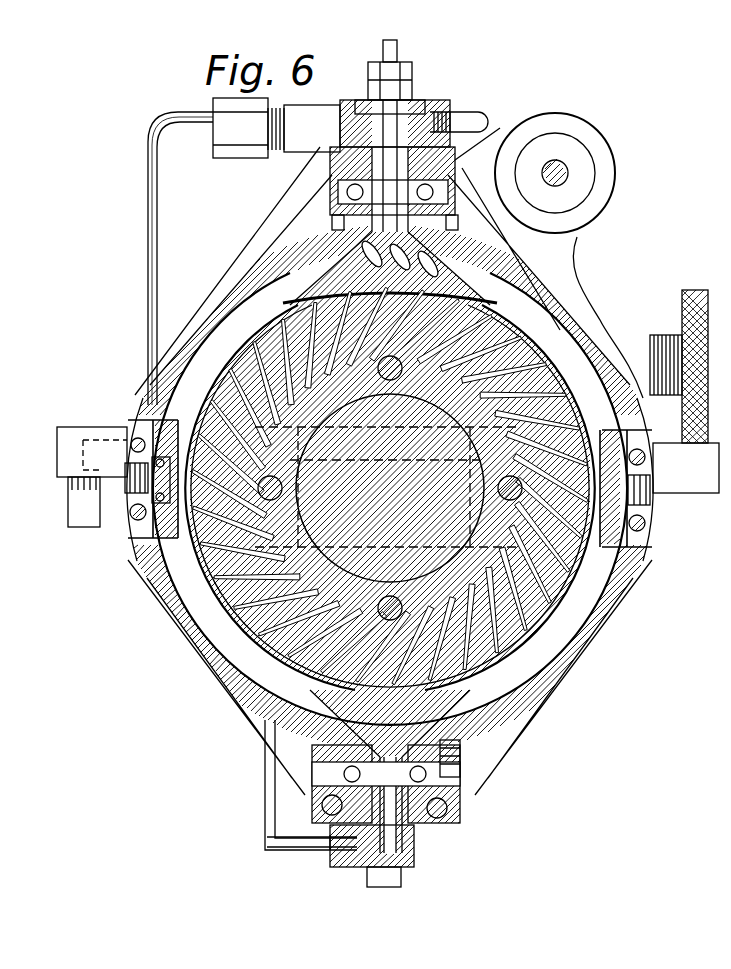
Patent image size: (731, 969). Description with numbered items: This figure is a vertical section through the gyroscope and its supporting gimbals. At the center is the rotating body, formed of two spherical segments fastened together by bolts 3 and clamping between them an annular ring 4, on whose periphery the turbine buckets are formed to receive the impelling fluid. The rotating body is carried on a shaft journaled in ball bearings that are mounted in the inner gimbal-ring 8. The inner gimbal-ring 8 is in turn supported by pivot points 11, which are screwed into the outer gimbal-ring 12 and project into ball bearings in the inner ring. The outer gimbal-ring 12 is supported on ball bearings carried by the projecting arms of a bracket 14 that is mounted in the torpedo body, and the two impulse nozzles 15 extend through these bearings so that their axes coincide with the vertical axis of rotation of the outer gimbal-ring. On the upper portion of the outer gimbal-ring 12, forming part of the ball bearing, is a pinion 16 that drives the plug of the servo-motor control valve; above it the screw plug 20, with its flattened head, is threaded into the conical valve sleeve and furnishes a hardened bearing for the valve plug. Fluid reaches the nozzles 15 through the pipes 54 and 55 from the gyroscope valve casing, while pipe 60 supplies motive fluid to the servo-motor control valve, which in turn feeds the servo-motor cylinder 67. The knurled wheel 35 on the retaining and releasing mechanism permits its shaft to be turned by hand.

The bolts 3 is at (403, 368).
The annular ring 4 is at (548, 344).
The inner gimbal-ring 8 is at (150, 535).
The pivot points 11 is at (126, 490).
The outer gimbal-ring 12 is at (168, 632).
The bracket 14 is at (275, 233).
The impulse nozzles 15 is at (455, 160).
The pinion 16 is at (332, 196).
The screw plug 20 is at (412, 80).
The knurled wheel 35 is at (682, 322).
The pipe 54 is at (268, 793).
The pipe 55 is at (476, 120).
The pipe 60 is at (150, 183).
The servo-motor cylinder 67 is at (614, 180).